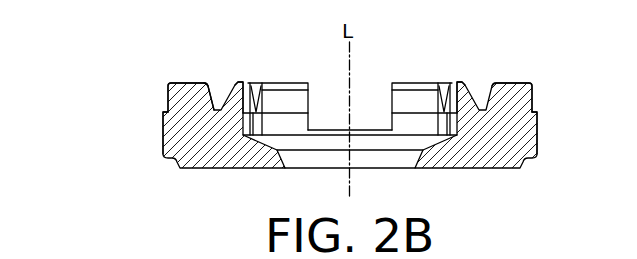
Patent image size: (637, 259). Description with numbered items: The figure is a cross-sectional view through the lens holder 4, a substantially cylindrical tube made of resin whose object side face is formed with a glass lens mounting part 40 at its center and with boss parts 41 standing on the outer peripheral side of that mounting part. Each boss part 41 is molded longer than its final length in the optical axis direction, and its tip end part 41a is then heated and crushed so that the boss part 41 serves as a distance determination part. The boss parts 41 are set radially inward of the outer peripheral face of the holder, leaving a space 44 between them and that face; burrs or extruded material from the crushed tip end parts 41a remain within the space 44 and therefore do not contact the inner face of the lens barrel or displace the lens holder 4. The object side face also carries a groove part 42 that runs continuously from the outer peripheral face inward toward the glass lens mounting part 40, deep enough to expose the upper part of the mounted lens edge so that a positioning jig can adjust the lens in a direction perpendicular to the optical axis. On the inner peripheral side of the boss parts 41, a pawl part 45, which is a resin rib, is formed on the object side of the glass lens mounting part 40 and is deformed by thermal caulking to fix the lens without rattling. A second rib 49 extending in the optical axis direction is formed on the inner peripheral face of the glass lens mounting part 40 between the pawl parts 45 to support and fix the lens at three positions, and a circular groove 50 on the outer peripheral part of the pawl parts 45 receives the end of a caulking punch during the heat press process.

The lens holder 4 is at (52, 30).
The glass lens mounting part 40 is at (288, 122).
The boss part 41 is at (182, 92).
The tip end part 41a is at (193, 82).
The groove part 42 is at (335, 127).
The space 44 is at (163, 113).
The pawl part 45 is at (242, 84).
The second rib 49 is at (255, 100).
The circular groove 50 is at (483, 96).